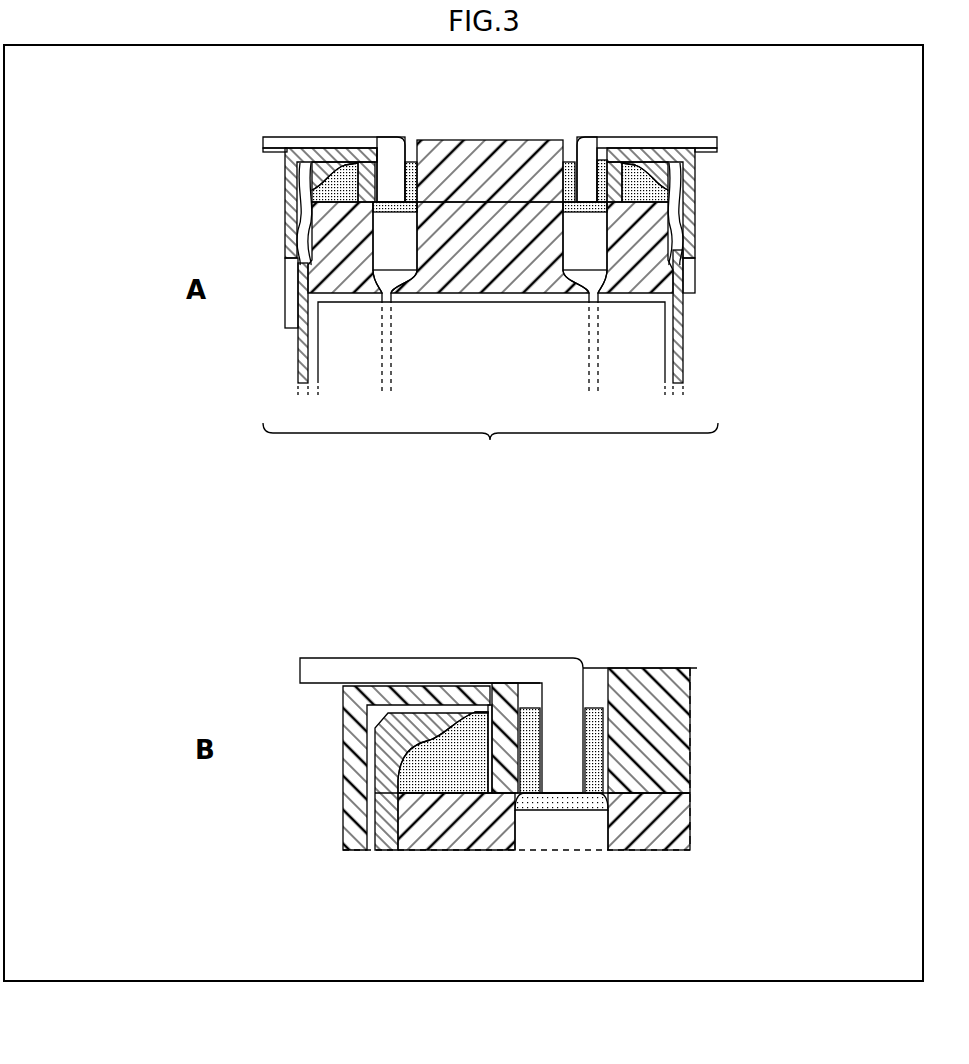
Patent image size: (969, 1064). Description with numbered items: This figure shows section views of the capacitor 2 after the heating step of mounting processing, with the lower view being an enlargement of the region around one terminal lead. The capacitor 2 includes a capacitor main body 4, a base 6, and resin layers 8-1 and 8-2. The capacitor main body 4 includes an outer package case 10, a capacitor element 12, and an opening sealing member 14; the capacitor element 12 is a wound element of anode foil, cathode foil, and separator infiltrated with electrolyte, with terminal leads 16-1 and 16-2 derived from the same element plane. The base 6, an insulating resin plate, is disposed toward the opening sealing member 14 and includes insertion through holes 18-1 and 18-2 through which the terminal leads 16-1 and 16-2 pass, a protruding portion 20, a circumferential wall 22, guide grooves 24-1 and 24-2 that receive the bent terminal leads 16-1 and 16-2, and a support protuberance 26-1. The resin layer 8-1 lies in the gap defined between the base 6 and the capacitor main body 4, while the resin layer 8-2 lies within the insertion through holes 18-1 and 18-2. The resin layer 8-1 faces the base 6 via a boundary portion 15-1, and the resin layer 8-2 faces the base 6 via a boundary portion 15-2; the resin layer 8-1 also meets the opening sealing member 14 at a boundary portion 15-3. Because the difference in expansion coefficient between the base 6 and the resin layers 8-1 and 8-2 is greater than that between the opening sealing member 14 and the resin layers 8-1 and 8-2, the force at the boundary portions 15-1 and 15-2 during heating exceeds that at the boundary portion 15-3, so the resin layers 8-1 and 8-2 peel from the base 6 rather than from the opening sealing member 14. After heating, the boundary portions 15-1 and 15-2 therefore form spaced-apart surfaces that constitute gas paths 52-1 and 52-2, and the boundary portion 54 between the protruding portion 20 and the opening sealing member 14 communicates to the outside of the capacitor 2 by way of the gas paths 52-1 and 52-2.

The capacitor 2 is at (490, 443).
The capacitor main body 4 is at (696, 328).
The base 6 is at (700, 224).
The resin layer 8-1 is at (605, 162).
The resin layer 8-2 is at (568, 162).
The outer package case 10 is at (683, 377).
The capacitor element 12 is at (653, 350).
The opening sealing member 14 is at (662, 252).
The boundary portion 15-1 is at (481, 700).
The boundary portion 15-2 is at (530, 708).
The boundary portion 15-3 is at (425, 757).
The terminal lead 16-1 is at (700, 137).
The terminal lead 16-2 is at (290, 138).
The insertion through hole 18-1 is at (592, 140).
The insertion through hole 18-2 is at (385, 137).
The protruding portion 20 is at (497, 190).
The circumferential wall 22 is at (285, 223).
The guide groove 24-1 is at (700, 152).
The guide groove 24-2 is at (272, 151).
The support protuberance 26-1 is at (672, 182).
The gas path 52-1 is at (472, 795).
The gas path 52-2 is at (625, 800).
The boundary portion 54 is at (463, 198).